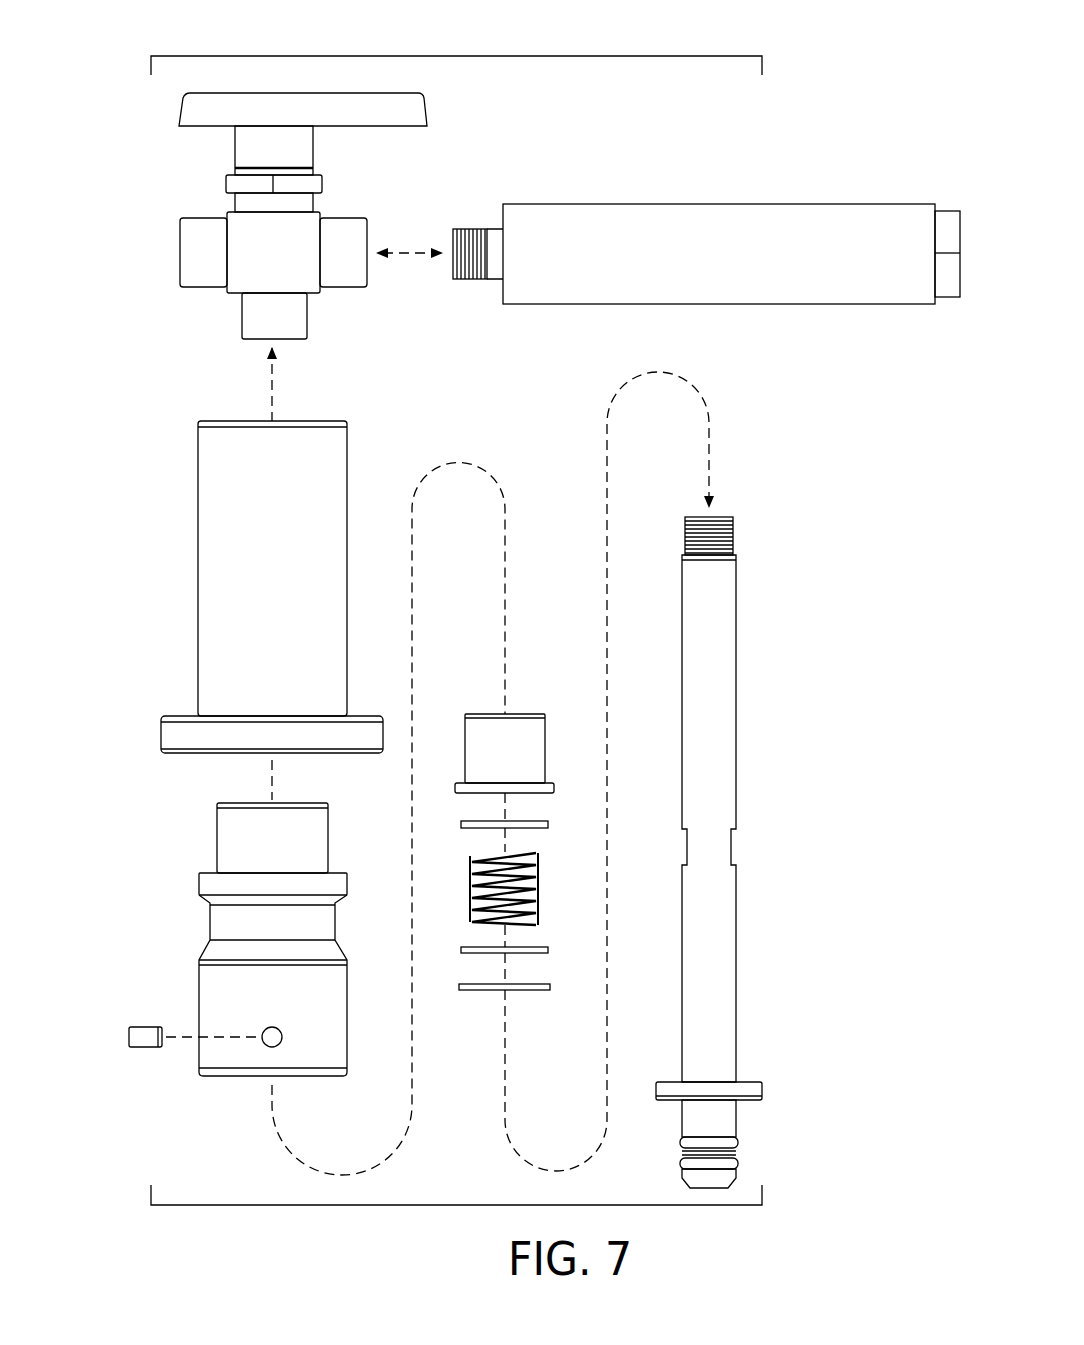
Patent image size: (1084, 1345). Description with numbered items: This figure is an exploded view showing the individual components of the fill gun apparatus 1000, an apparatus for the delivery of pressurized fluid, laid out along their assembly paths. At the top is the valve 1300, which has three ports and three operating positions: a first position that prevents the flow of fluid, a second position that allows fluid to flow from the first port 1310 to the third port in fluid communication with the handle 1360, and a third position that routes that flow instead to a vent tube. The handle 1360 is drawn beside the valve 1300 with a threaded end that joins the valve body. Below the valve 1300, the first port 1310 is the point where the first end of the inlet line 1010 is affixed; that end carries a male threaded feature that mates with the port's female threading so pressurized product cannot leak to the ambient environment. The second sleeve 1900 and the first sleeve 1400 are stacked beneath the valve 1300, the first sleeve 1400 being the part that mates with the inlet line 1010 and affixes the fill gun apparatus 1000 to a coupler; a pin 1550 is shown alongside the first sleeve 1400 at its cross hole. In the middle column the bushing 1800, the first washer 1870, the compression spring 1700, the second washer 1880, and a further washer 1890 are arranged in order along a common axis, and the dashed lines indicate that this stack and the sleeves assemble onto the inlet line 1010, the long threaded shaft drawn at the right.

The fill gun apparatus 1000 is at (120, 61).
The valve 1300 is at (146, 161).
The first port 1310 is at (307, 319).
The handle 1360 is at (674, 304).
The second sleeve 1900 is at (171, 421).
The first sleeve 1400 is at (197, 811).
The pin 1550 is at (124, 1055).
The bushing 1800 is at (534, 703).
The first washer 1870 is at (548, 823).
The compression spring 1700 is at (538, 886).
The second washer 1880 is at (548, 948).
The washer 1890 is at (550, 985).
The inlet line 1010 is at (780, 618).